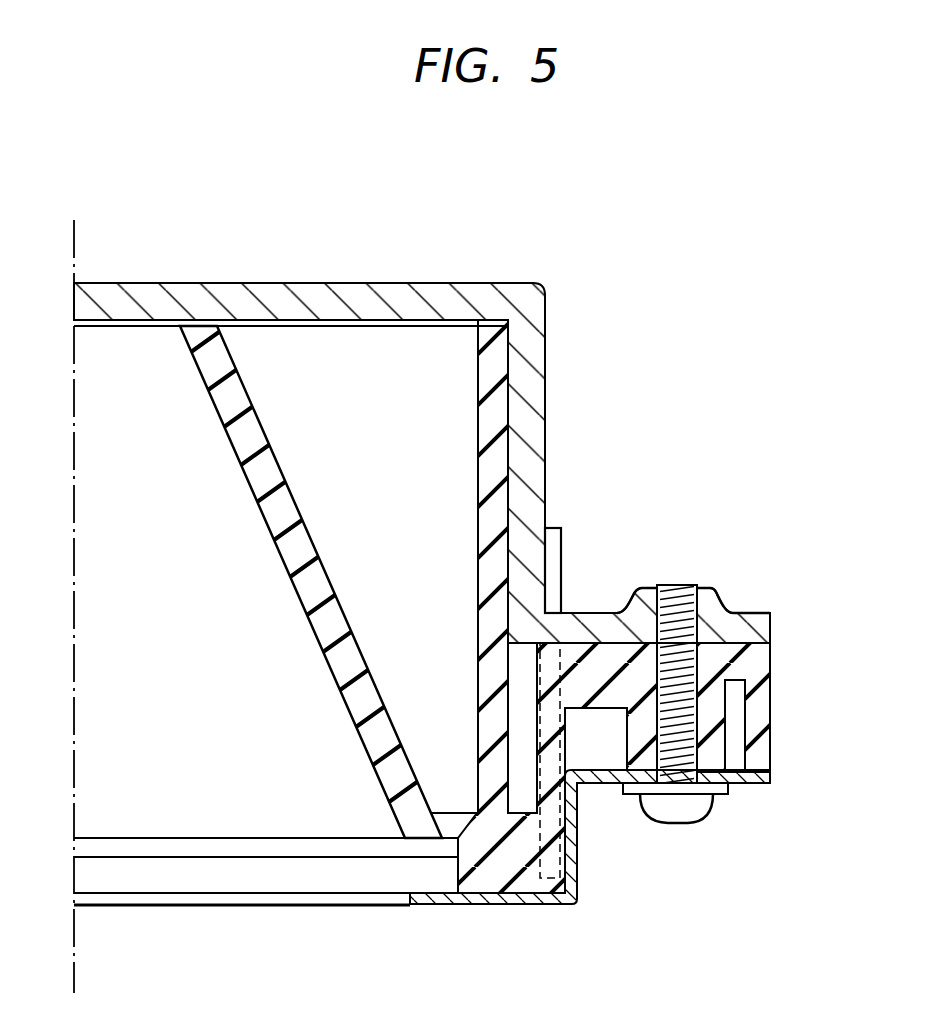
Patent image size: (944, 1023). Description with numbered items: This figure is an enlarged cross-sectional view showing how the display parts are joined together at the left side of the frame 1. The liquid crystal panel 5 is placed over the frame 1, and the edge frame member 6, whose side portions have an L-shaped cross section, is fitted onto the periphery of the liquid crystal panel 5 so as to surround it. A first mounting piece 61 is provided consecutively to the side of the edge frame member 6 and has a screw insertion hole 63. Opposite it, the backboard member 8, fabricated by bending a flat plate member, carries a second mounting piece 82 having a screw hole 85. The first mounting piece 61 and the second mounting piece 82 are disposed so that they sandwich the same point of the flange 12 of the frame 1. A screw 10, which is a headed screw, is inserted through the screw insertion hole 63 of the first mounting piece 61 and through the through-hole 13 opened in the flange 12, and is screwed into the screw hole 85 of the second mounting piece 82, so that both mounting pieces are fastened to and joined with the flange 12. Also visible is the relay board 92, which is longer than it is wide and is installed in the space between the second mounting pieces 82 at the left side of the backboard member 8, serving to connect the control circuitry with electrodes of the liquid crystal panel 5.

The frame 1 is at (800, 687).
The liquid crystal panel 5 is at (303, 906).
The edge frame member 6 is at (472, 906).
The backboard member 8 is at (405, 256).
The screw 10 is at (705, 822).
The flange 12 is at (770, 662).
The through-hole 13 is at (690, 727).
The first mounting piece 61 is at (728, 779).
The screw insertion hole 63 is at (663, 778).
The second mounting piece 82 is at (757, 610).
The screw hole 85 is at (668, 595).
The relay board 92 is at (560, 514).